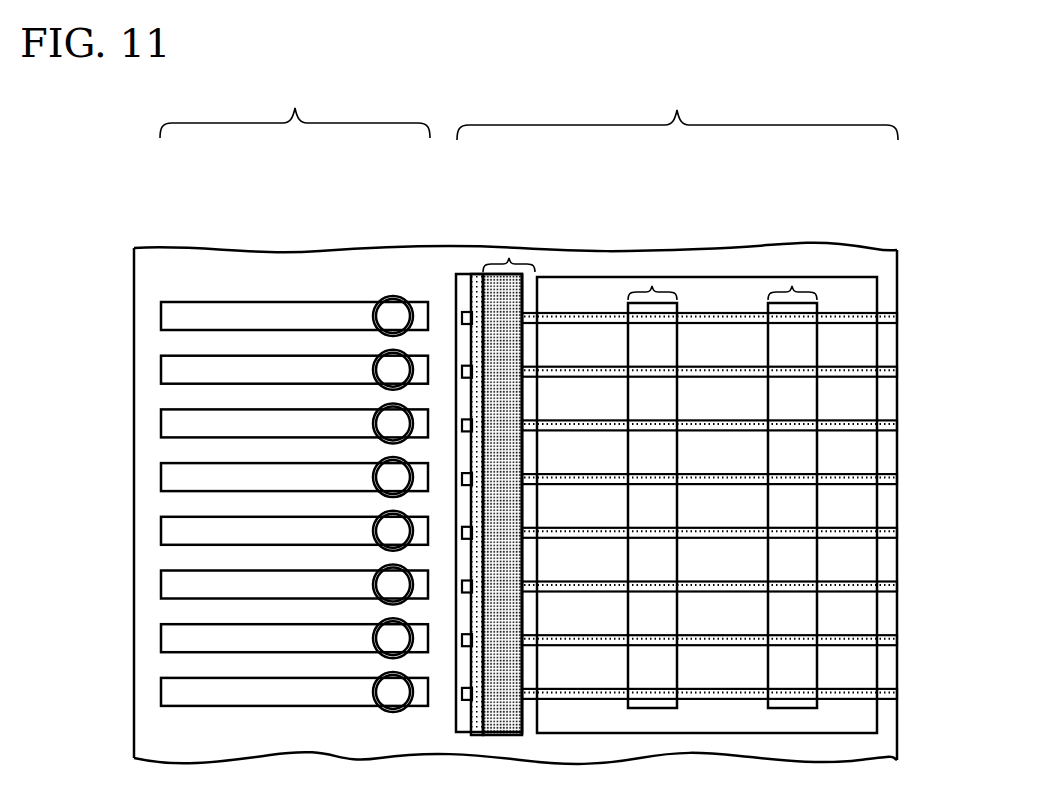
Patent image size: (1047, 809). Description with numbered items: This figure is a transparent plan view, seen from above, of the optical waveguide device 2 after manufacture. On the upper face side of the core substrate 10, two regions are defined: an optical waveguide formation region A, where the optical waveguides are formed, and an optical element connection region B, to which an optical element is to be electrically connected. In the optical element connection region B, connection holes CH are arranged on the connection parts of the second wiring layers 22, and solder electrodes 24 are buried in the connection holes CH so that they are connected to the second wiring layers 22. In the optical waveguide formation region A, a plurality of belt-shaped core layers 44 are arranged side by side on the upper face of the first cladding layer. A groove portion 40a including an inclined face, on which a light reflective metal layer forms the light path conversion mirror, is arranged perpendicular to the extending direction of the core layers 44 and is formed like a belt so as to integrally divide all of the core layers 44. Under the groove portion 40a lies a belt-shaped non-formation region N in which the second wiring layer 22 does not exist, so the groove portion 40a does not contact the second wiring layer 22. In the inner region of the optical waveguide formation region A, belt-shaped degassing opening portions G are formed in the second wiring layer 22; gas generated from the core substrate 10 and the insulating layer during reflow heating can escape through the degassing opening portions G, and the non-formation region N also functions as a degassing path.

The optical waveguide device 2 is at (475, 85).
The core substrate 10 is at (897, 446).
The second wiring layer 22 is at (243, 312).
The solder electrode 24 is at (387, 315).
The connection hole CH is at (387, 296).
The non-formation region N is at (509, 258).
The groove portion 40a is at (522, 293).
The core layer 44 is at (733, 367).
The degassing opening portion G is at (654, 286).
The optical waveguide formation region A is at (677, 110).
The optical element connection region B is at (295, 108).